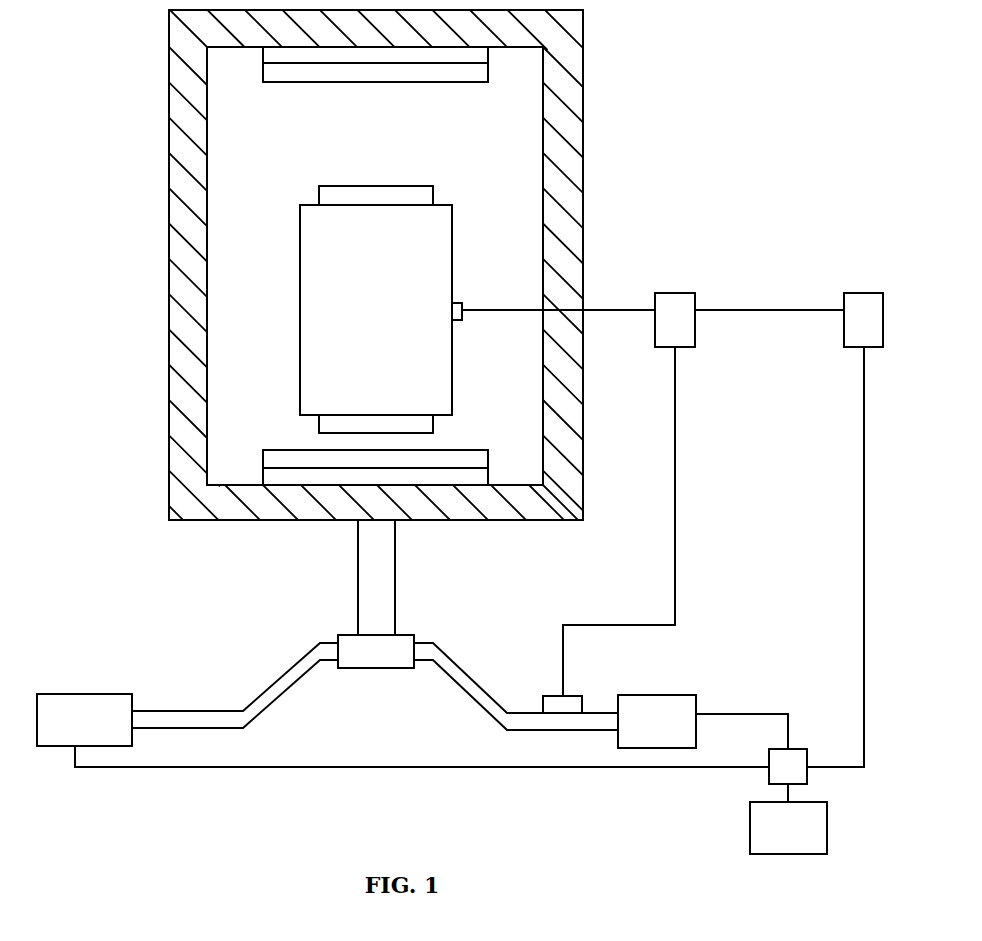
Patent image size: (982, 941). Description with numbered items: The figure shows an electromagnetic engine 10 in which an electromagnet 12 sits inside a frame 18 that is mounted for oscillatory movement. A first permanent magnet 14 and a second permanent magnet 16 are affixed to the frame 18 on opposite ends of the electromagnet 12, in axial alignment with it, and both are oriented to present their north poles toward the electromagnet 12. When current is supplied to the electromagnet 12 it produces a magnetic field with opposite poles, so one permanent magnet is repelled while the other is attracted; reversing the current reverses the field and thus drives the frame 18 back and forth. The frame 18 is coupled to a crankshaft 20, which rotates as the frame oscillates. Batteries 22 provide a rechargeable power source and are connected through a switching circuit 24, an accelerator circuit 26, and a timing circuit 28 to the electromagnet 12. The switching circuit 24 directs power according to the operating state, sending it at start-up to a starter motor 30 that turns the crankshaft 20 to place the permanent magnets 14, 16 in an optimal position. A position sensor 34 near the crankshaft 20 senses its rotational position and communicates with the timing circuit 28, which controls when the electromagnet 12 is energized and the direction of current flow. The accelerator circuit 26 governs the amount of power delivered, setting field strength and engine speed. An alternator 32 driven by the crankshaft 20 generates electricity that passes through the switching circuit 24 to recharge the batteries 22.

The electromagnetic engine 10 is at (677, 45).
The electromagnet 12 is at (453, 257).
The first permanent magnet 14 is at (278, 83).
The second permanent magnet 16 is at (288, 448).
The frame 18 is at (583, 200).
The crankshaft 20 is at (183, 710).
The batteries 22 is at (750, 837).
The switching circuit 24 is at (767, 779).
The accelerator circuit 26 is at (868, 293).
The timing circuit 28 is at (680, 293).
The starter motor 30 is at (82, 693).
The alternator 32 is at (668, 695).
The position sensor 34 is at (553, 695).